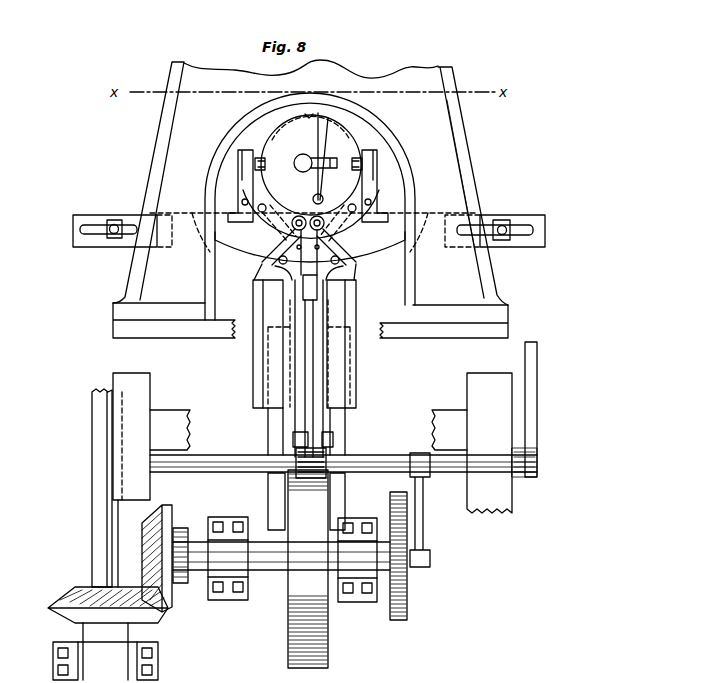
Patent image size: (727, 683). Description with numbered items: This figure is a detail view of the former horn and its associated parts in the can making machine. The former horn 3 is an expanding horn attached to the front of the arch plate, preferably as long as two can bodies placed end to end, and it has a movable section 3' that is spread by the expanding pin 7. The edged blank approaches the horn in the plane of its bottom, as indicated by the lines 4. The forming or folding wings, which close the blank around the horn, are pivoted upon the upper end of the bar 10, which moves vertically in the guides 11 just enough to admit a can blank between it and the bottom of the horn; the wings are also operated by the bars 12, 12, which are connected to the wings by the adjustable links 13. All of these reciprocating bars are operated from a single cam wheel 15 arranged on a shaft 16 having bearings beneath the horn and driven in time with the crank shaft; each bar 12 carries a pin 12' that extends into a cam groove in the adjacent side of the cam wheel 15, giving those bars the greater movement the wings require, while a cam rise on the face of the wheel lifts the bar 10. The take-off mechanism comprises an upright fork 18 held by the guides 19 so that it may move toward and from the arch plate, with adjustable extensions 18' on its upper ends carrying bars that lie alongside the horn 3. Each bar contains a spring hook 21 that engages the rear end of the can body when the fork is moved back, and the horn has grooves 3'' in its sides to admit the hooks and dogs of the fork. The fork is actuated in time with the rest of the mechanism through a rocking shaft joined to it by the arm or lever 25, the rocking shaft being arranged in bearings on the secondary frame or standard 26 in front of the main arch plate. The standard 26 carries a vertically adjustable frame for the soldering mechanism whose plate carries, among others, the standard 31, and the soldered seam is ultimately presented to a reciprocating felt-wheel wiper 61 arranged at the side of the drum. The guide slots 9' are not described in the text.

The former horn 3 is at (311, 152).
The movable section of the horn 3' is at (330, 158).
The grooves in the sides of the horn 3'' is at (308, 133).
The lines representing the edged blank 4 is at (456, 152).
The expanding pin of the horn 7 is at (308, 157).
The guide slots 9' is at (310, 241).
The bar 10 is at (297, 357).
The guides 11 is at (268, 322).
The bars 12 is at (311, 431).
The pin 12' is at (313, 501).
The adjustable links 13 is at (256, 290).
The cam wheel 15 is at (308, 569).
The shaft 16 is at (282, 580).
The fork 18 is at (310, 248).
The adjustable extensions 18' is at (307, 168).
The guides 19 is at (400, 220).
The spring hook 21 is at (413, 536).
The arm or lever 25 is at (380, 455).
The secondary frame or standard 26 is at (304, 387).
The standard 31 is at (462, 160).
The wiper 61 is at (537, 400).